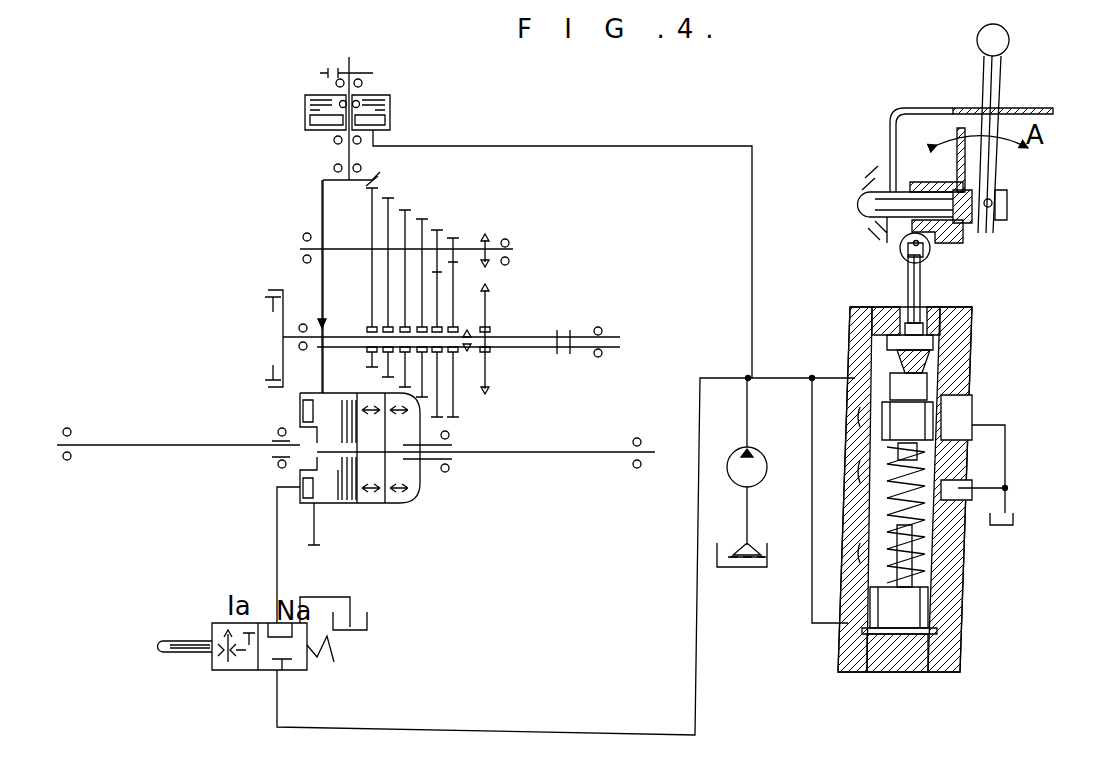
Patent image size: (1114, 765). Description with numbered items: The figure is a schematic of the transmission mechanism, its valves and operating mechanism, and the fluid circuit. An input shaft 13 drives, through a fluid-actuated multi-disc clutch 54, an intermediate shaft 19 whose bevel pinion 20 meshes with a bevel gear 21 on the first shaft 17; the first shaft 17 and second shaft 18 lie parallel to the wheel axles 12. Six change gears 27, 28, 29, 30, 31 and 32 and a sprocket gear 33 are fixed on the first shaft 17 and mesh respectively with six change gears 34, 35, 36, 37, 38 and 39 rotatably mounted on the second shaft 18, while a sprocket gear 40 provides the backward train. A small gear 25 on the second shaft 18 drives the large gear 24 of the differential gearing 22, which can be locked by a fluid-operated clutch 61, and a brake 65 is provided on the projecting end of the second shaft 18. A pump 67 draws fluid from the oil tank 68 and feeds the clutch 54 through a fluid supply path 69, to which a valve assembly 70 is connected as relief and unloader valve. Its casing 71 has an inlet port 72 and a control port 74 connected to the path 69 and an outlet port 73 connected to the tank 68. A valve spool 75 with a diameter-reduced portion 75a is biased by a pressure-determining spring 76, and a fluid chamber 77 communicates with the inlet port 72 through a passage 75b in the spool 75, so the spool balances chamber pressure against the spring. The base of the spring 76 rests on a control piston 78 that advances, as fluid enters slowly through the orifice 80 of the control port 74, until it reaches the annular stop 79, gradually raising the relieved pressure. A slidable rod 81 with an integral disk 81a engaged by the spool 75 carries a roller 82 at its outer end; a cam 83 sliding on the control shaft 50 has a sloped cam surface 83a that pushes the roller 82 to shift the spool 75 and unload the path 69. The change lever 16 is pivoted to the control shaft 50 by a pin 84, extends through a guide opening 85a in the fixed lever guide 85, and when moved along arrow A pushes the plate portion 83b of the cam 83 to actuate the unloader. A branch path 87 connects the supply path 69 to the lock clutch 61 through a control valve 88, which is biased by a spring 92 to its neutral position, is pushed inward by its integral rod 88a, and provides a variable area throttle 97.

The wheel axles 12 is at (148, 443).
The input shaft 13 is at (352, 62).
The change lever 16 is at (1009, 40).
The first shaft 17 is at (353, 226).
The second shaft 18 is at (347, 330).
The intermediate shaft 19 is at (347, 157).
The bevel pinion 20 is at (368, 178).
The bevel gear 21 is at (325, 190).
The differential gearing 22 is at (383, 503).
The large gear 24 is at (316, 547).
The small gear 25 is at (320, 323).
The change gear 27 is at (455, 255).
The change gear 28 is at (455, 238).
The change gear 29 is at (437, 230).
The change gear 30 is at (408, 217).
The change gear 31 is at (390, 210).
The change gear 32 is at (370, 190).
The sprocket gear 33 is at (489, 234).
The change gear 34 is at (455, 415).
The change gear 35 is at (438, 418).
The change gear 36 is at (421, 402).
The change gear 37 is at (403, 388).
The change gear 38 is at (385, 377).
The change gear 39 is at (368, 364).
The sprocket gear 40 is at (490, 288).
The control shaft 50 is at (887, 200).
The fluid-actuated clutch 54 is at (392, 110).
The fluid-operated clutch 61 is at (322, 500).
The brake 65 is at (272, 388).
The pump 67 is at (752, 450).
The oil tank 68 is at (370, 622).
The fluid supply path 69 is at (752, 203).
The valve assembly 70 is at (975, 392).
The casing 71 is at (853, 493).
The inlet port 72 is at (857, 367).
The outlet port 73 is at (958, 418).
The control port 74 is at (838, 657).
The valve spool 75 is at (917, 413).
The diameter-reduced portion 75a is at (923, 390).
The passage 75b is at (890, 333).
The pressure-determining spring 76 is at (860, 467).
The fluid chamber 77 is at (905, 340).
The control piston 78 is at (908, 607).
The annular stop 79 is at (930, 537).
The orifice 80 is at (863, 634).
The slidable rod 81 is at (915, 290).
The integral disk 81a is at (915, 330).
The roller 82 is at (887, 232).
The cam 83 is at (895, 167).
The sloped cam surface 83a is at (967, 240).
The plate portion 83b is at (957, 135).
The horizontal pin 84 is at (1008, 203).
The lever guide 85 is at (1043, 112).
The guide opening 85a is at (953, 108).
The branch path 87 is at (510, 730).
The control valve 88 is at (215, 623).
The integral rod 88a is at (180, 643).
The spring 92 is at (325, 660).
The variable area throttle 97 is at (218, 655).